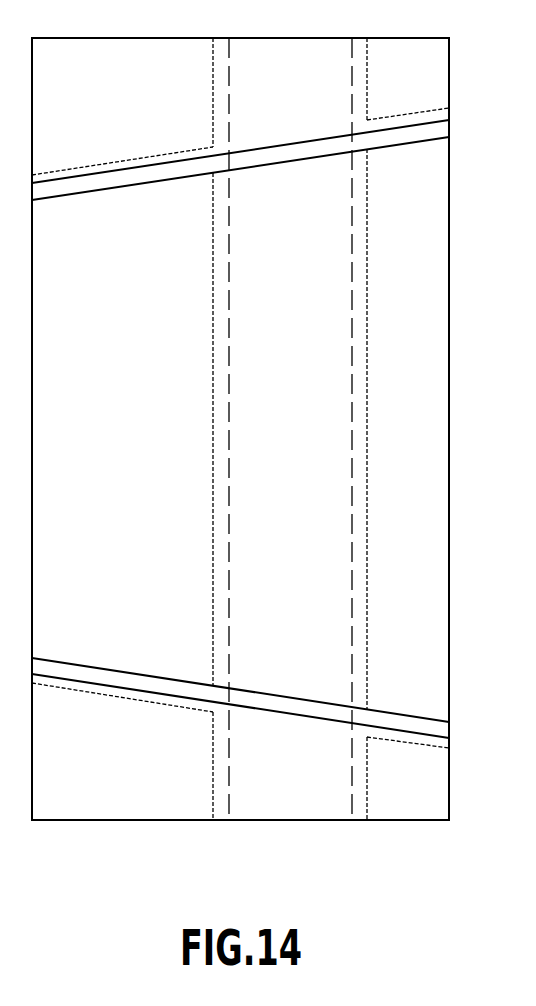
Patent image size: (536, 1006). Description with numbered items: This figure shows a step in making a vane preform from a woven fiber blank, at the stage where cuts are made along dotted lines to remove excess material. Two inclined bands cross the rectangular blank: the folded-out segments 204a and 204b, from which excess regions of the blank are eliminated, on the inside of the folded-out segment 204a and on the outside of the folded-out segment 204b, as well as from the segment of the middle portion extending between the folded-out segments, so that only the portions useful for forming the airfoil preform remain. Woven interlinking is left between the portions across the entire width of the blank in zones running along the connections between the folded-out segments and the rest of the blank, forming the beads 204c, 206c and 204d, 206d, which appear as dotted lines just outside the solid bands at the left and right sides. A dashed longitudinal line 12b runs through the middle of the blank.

The panel boundary / fold line 12b is at (230, 505).
The folded-out segment 204a is at (141, 683).
The folded-out segment 204b is at (143, 176).
The bead 204c is at (92, 690).
The bead 204d is at (98, 172).
The bead 206c is at (407, 740).
The bead 206d is at (402, 118).